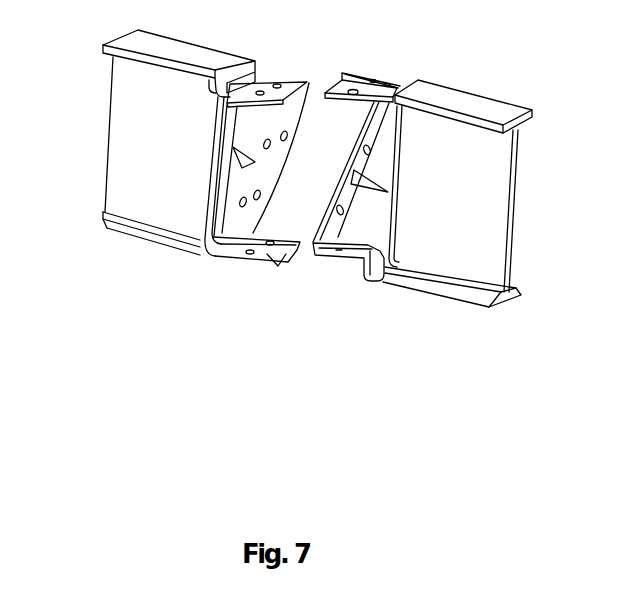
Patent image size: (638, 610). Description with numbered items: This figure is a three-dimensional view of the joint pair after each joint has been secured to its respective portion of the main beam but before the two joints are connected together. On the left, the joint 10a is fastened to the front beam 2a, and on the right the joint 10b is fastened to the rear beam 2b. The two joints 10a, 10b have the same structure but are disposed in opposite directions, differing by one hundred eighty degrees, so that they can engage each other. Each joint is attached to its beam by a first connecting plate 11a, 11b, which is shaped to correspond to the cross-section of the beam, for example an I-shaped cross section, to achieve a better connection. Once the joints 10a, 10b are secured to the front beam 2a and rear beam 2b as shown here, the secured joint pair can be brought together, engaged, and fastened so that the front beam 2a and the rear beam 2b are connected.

The front beam 2a is at (142, 170).
The rear beam 2b is at (480, 210).
The joint 10a is at (250, 275).
The joint 10b is at (352, 282).
The first connecting plate 11a is at (222, 152).
The first connecting plate 11b is at (398, 190).